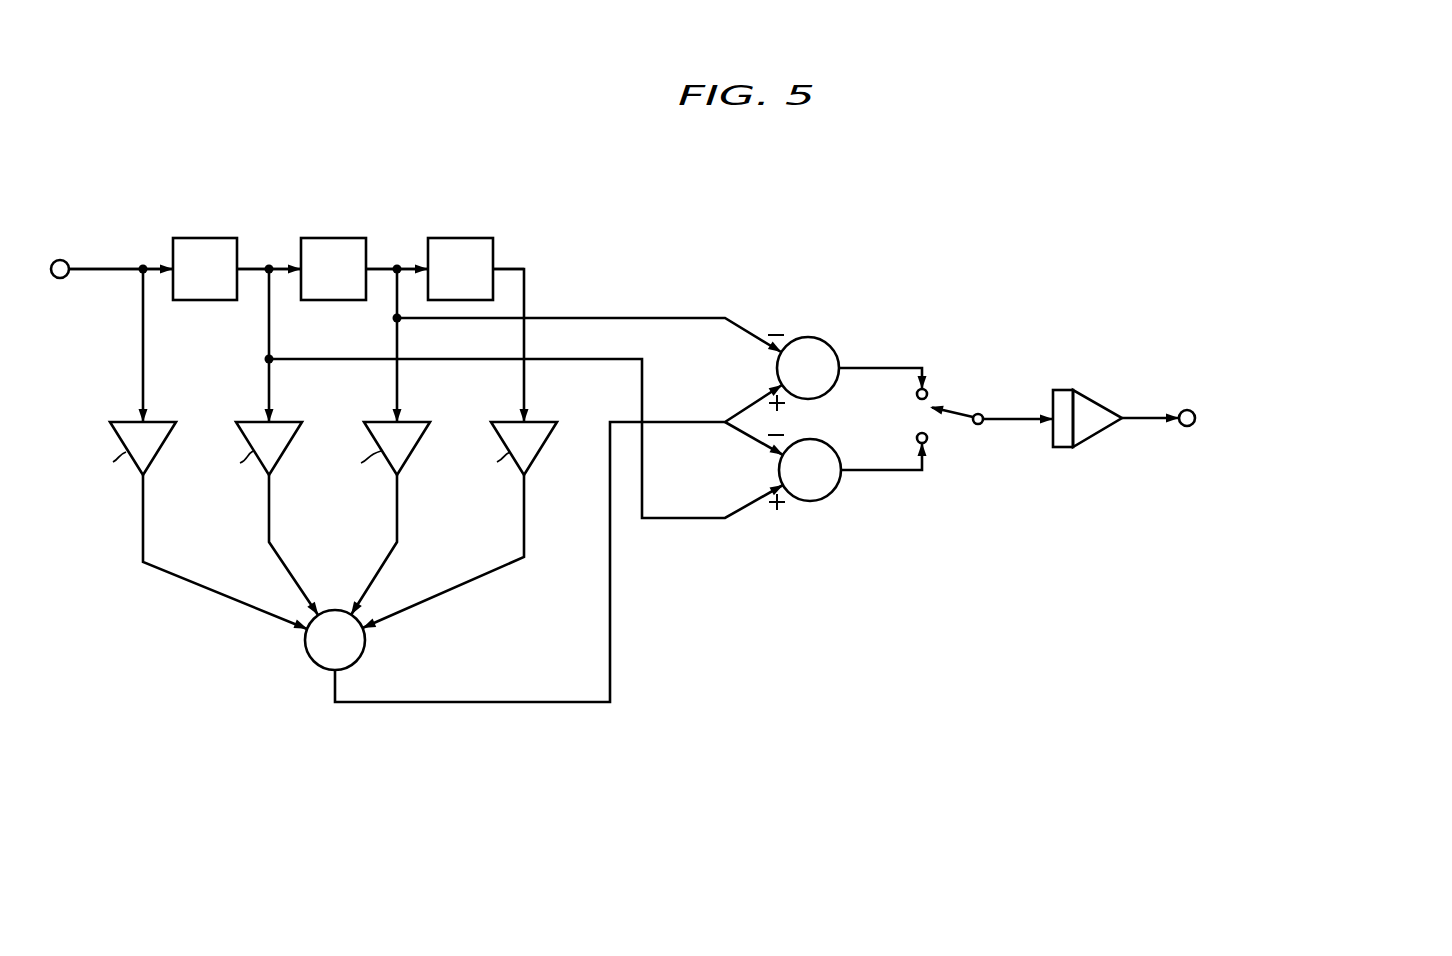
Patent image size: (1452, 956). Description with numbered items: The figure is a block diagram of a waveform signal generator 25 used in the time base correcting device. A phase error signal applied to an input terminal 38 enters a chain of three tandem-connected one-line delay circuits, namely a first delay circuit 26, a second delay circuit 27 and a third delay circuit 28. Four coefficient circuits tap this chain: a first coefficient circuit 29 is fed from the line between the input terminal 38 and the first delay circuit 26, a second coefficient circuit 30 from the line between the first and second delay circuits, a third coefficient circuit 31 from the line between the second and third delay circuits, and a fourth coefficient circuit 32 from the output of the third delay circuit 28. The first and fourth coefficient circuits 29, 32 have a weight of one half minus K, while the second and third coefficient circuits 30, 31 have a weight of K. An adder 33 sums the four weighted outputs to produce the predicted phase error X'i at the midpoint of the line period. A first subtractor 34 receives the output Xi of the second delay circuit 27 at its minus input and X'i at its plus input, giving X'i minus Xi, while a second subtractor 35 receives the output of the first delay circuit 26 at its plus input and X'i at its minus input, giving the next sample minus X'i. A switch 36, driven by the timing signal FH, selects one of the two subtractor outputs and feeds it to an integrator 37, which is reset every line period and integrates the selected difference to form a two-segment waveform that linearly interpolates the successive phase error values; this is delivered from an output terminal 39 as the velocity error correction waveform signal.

The waveform signal generator 25 is at (531, 259).
The first 1H delay circuit 26 is at (222, 238).
The second 1H delay circuit 27 is at (345, 238).
The third 1H delay circuit 28 is at (468, 238).
The first coefficient circuit 29 is at (165, 422).
The second coefficient circuit 30 is at (283, 422).
The third coefficient circuit 31 is at (413, 422).
The fourth coefficient circuit 32 is at (543, 422).
The adder 33 is at (306, 652).
The first subtractor 34 is at (825, 340).
The second subtractor 35 is at (800, 500).
The switch 36 is at (950, 410).
The integrator 37 is at (1087, 390).
The input terminal 38 is at (68, 262).
The output terminal 39 is at (1180, 410).